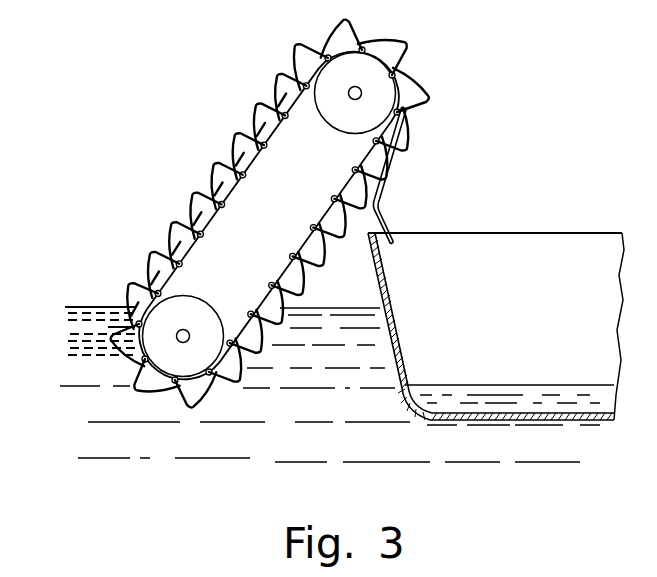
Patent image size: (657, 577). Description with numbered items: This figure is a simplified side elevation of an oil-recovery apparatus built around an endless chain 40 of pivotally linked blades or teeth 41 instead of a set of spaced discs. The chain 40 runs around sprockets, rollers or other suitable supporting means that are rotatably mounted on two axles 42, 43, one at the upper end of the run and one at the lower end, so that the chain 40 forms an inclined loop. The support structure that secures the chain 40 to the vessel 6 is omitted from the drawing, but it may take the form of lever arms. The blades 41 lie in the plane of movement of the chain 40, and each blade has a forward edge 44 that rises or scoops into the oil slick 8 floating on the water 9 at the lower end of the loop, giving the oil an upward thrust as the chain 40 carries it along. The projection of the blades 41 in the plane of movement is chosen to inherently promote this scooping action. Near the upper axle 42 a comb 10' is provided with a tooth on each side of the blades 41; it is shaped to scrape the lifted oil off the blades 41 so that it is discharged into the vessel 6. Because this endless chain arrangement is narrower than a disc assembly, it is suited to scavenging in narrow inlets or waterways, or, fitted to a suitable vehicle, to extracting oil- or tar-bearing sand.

The endless chain 40 is at (180, 170).
The blades or teeth 41 is at (257, 110).
The axle 42 is at (361, 89).
The axle 43 is at (178, 343).
The forward edge 44 is at (140, 377).
The oil slick 8 is at (77, 322).
The liquid bath 9 is at (62, 432).
The vessel 6 is at (548, 263).
The comb 10' is at (437, 175).